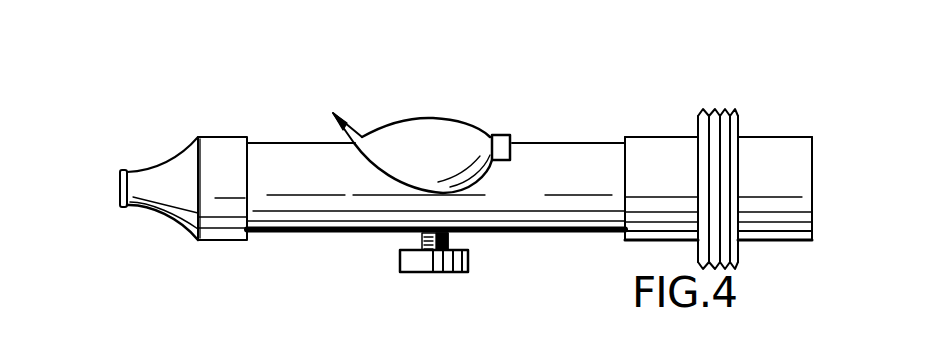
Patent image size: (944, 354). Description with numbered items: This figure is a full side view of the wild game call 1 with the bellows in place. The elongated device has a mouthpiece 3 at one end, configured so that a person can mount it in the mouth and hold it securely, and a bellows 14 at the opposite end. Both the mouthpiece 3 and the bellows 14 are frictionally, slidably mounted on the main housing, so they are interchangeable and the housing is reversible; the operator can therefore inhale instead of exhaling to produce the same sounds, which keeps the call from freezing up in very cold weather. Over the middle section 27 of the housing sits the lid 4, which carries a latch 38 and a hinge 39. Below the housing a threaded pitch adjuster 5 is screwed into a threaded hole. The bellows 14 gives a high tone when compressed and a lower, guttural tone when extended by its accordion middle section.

The wild game call 1 is at (628, 105).
The mouthpiece 3 is at (217, 145).
The lid 4 is at (413, 138).
The pitch adjuster 5 is at (407, 260).
The bellows 14 is at (737, 114).
The middle section 27 is at (517, 78).
The latch 38 is at (367, 134).
The hinge 39 is at (500, 135).